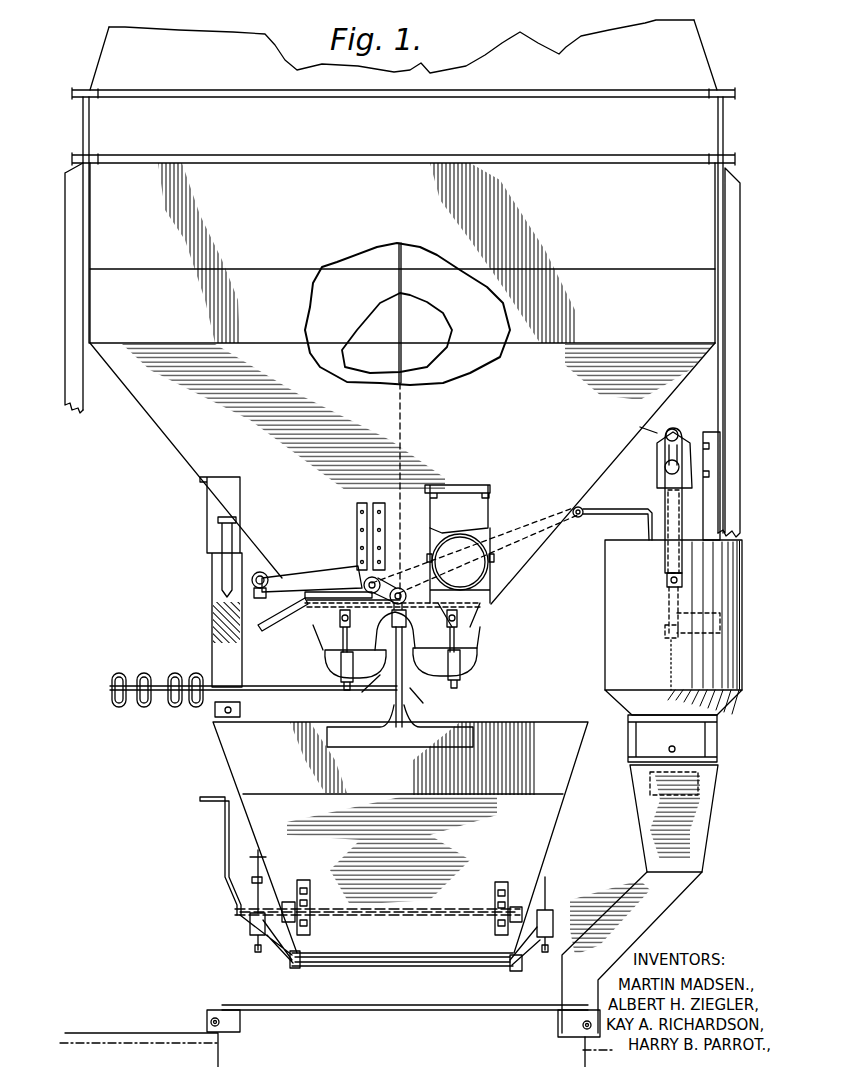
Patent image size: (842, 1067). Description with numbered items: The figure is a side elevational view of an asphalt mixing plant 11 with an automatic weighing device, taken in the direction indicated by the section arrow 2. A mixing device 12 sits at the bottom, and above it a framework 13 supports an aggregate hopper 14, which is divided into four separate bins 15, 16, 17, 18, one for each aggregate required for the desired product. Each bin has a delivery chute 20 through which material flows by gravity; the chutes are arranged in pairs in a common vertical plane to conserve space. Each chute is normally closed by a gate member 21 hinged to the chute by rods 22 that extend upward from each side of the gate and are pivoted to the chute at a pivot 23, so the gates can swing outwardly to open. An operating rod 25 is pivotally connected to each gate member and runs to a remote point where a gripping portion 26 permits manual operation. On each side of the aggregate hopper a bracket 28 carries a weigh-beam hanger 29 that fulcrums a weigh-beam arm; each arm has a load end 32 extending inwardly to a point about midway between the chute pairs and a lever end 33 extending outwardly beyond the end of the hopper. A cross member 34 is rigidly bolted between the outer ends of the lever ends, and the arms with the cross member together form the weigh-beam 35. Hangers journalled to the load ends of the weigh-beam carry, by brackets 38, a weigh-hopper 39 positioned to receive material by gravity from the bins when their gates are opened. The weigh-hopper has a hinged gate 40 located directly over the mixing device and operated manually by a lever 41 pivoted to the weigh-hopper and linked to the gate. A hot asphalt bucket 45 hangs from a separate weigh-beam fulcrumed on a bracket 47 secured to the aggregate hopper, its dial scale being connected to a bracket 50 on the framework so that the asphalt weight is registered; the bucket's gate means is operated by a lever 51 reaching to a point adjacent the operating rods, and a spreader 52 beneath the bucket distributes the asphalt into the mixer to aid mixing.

The section line of FIG. 2 is at (130, 608).
The mixing plant 11 is at (153, 483).
The mixing device 12 is at (258, 1060).
The framework 13 is at (66, 303).
The aggregate hopper 14 is at (162, 394).
The bin 15 is at (470, 305).
The bin 16 is at (357, 305).
The bin 17 is at (437, 342).
The bin 18 is at (380, 357).
The delivery chute 20 is at (337, 640).
The gate member 21 is at (335, 660).
The rod 22 is at (480, 663).
The pivot 23 is at (467, 627).
The rod 25 is at (276, 690).
The gripping portion 26 is at (168, 710).
The bracket 28 is at (357, 512).
The weigh-beam hanger 29 is at (363, 578).
The load end 32 is at (380, 582).
The lever end 33 is at (310, 588).
The cross member 34 is at (252, 576).
The weigh-beam 35 is at (289, 577).
The bracket 38 is at (412, 710).
The weigh-hopper 39 is at (243, 757).
The hinged gate 40 is at (407, 962).
The lever 41 is at (222, 841).
The hot asphalt bucket 45 is at (720, 645).
The bracket 47 is at (683, 465).
The bracket 50 is at (745, 578).
The lever 51 is at (270, 627).
The spreader 52 is at (700, 823).